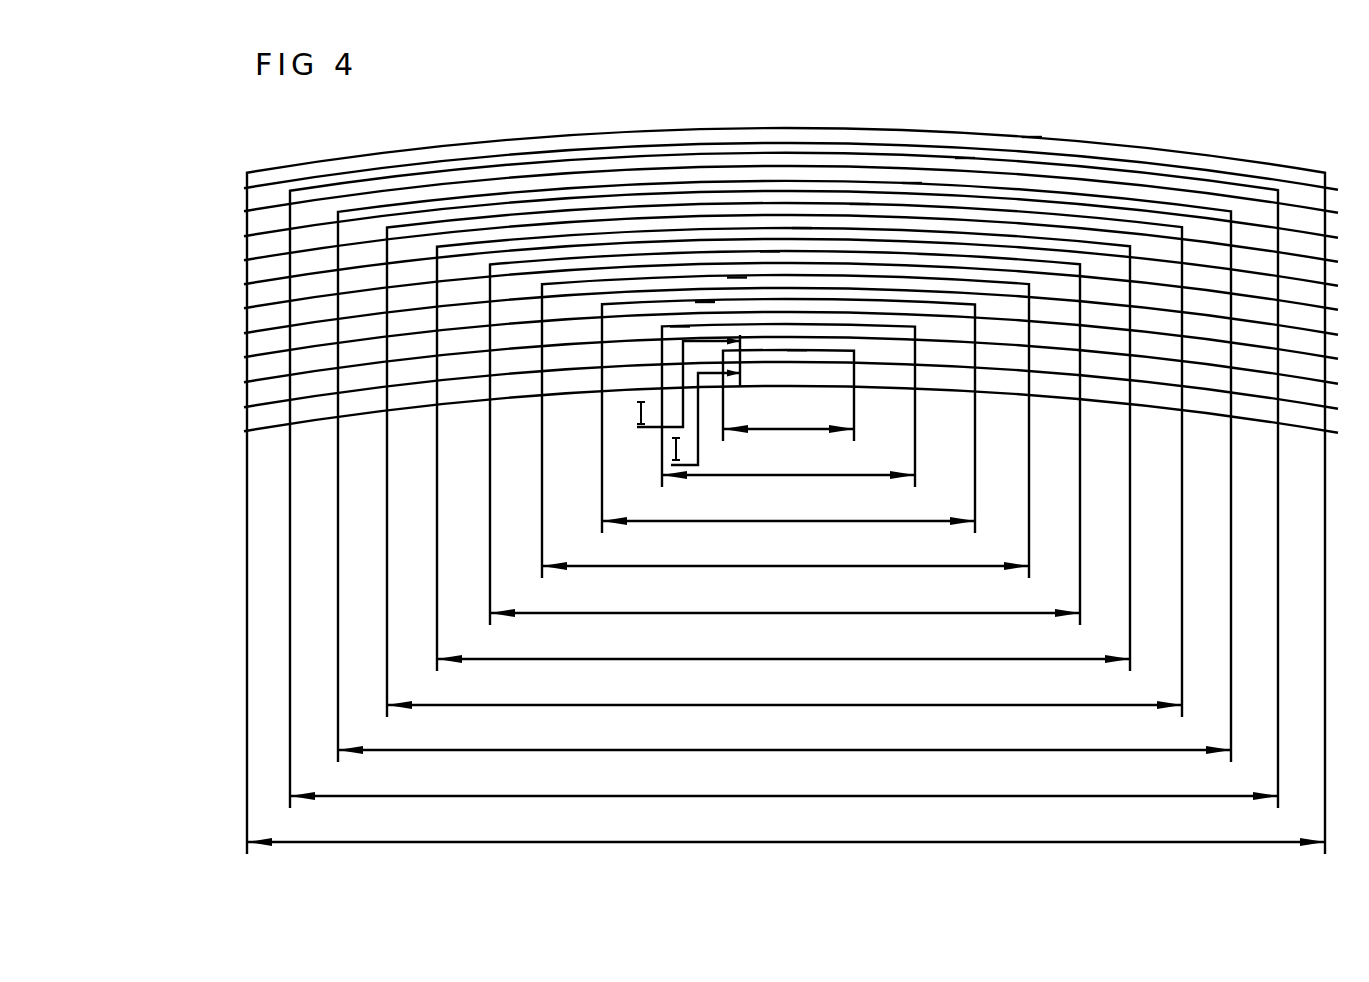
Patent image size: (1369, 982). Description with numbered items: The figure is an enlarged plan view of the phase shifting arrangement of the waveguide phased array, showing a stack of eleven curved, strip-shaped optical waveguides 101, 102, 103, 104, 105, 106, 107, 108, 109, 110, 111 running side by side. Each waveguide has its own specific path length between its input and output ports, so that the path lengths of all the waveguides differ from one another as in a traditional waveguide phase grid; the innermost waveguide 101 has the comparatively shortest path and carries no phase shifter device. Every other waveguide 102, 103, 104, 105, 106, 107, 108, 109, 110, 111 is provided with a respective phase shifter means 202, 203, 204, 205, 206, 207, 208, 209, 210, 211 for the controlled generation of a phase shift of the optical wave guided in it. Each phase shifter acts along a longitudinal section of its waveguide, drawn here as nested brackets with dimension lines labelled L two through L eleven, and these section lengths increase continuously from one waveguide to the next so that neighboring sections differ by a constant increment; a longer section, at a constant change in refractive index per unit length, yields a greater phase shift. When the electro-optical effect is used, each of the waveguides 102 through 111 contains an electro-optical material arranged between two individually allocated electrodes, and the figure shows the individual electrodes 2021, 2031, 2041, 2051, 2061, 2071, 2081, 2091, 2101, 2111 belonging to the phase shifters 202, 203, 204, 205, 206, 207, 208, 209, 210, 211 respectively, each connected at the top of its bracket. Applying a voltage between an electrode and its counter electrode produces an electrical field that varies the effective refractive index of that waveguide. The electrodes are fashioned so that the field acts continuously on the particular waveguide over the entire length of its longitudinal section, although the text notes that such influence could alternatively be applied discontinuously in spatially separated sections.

The strip-shaped optical waveguide 101 is at (247, 431).
The strip-shaped optical waveguide 102 is at (247, 407).
The strip-shaped optical waveguide 103 is at (247, 382).
The strip-shaped optical waveguide 104 is at (247, 357).
The strip-shaped optical waveguide 105 is at (247, 333).
The strip-shaped optical waveguide 106 is at (247, 308).
The strip-shaped optical waveguide 107 is at (247, 284).
The strip-shaped optical waveguide 108 is at (247, 260).
The strip-shaped optical waveguide 109 is at (247, 236).
The strip-shaped optical waveguide 110 is at (247, 211).
The strip-shaped optical waveguide 111 is at (247, 173).
The phase shifter means 202 is at (838, 388).
The phase shifter means 203 is at (893, 365).
The phase shifter means 204 is at (953, 342).
The phase shifter means 205 is at (1007, 321).
The phase shifter means 206 is at (1060, 300).
The phase shifter means 207 is at (1110, 281).
The phase shifter means 208 is at (1160, 262).
The phase shifter means 209 is at (1209, 244).
The phase shifter means 210 is at (1259, 226).
The phase shifter means 211 is at (1280, 150).
The electrode 2021 is at (797, 358).
The electrode 2031 is at (678, 332).
The electrode 2041 is at (705, 308).
The electrode 2051 is at (737, 281).
The electrode 2061 is at (770, 256).
The electrode 2071 is at (802, 232).
The electrode 2081 is at (860, 206).
The electrode 2091 is at (912, 184).
The electrode 2101 is at (966, 160).
The electrode 2111 is at (1032, 139).